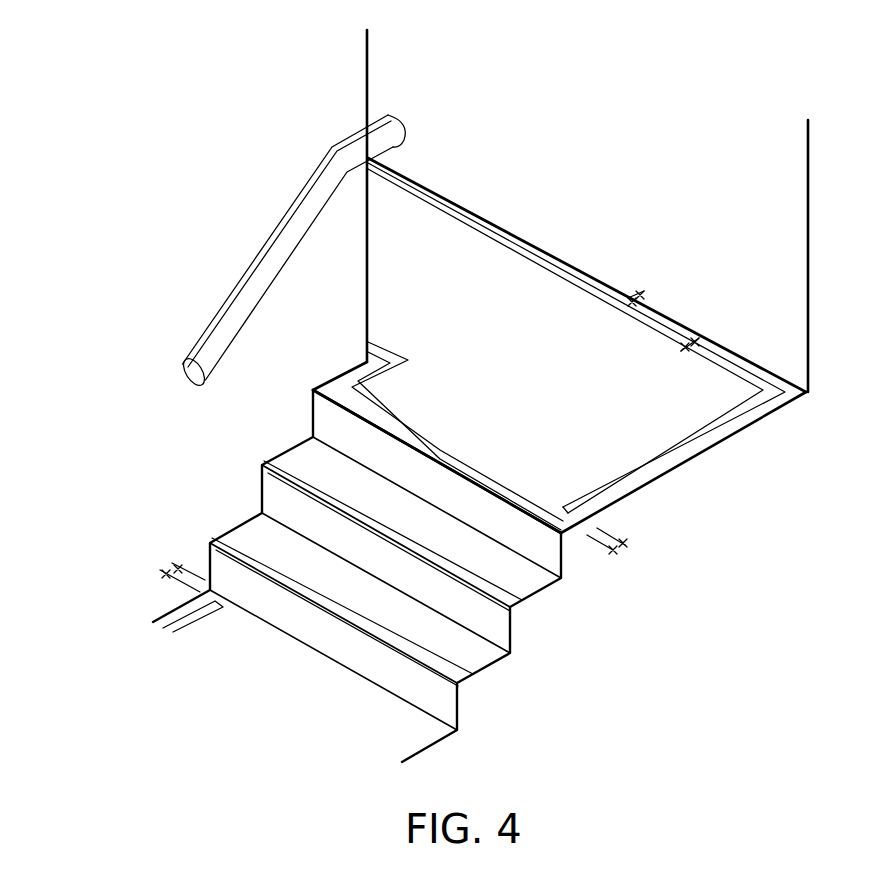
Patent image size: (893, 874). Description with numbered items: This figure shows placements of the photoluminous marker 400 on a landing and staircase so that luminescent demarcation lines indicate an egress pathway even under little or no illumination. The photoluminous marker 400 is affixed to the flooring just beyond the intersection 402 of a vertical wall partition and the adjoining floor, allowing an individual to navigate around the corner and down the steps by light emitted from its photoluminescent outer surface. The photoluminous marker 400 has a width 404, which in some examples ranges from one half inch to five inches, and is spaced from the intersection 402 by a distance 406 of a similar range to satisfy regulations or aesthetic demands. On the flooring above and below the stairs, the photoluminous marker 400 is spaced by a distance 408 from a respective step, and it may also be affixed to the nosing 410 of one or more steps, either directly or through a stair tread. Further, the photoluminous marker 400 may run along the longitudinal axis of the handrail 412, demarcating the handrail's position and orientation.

The photoluminous marker 400 is at (402, 362).
The intersection 402 is at (590, 280).
The width 404 is at (650, 353).
The distance 406 is at (645, 294).
The distance 408 is at (628, 541).
The nosing 410 is at (525, 515).
The handrail 412 is at (397, 113).